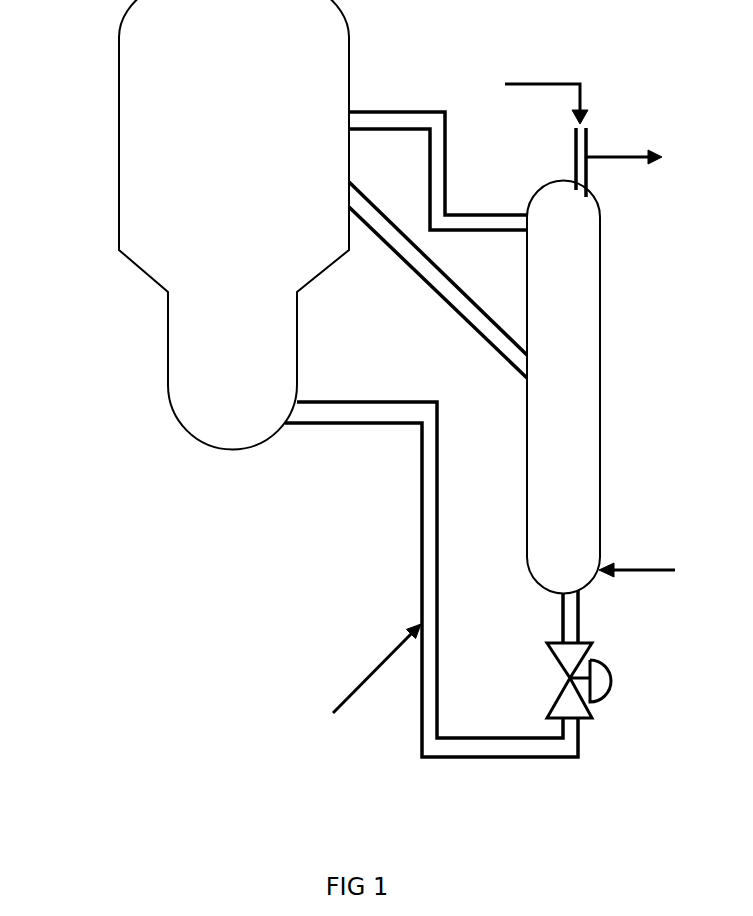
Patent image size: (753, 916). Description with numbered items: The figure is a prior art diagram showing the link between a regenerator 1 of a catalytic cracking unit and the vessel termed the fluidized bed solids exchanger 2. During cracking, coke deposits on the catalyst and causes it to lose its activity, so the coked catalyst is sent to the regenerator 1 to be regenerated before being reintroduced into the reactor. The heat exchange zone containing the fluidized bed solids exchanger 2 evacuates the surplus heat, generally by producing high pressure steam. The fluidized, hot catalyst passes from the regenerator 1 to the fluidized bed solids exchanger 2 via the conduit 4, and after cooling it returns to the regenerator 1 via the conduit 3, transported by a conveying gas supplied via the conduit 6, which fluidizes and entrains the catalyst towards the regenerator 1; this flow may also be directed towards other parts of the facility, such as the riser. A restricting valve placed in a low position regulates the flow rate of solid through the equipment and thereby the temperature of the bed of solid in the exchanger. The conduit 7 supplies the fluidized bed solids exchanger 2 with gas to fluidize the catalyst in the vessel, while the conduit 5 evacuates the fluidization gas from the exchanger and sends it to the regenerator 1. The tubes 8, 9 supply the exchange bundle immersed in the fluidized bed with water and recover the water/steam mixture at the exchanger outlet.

The regenerator 1 is at (119, 142).
The fluidized bed solids exchanger 2 is at (600, 370).
The conduit 3 is at (417, 510).
The conduit 4 is at (415, 270).
The conduit 5 is at (400, 110).
The conduit 6 is at (362, 675).
The conduit 7 is at (645, 568).
The tube 8 is at (522, 83).
The tube 9 is at (627, 156).